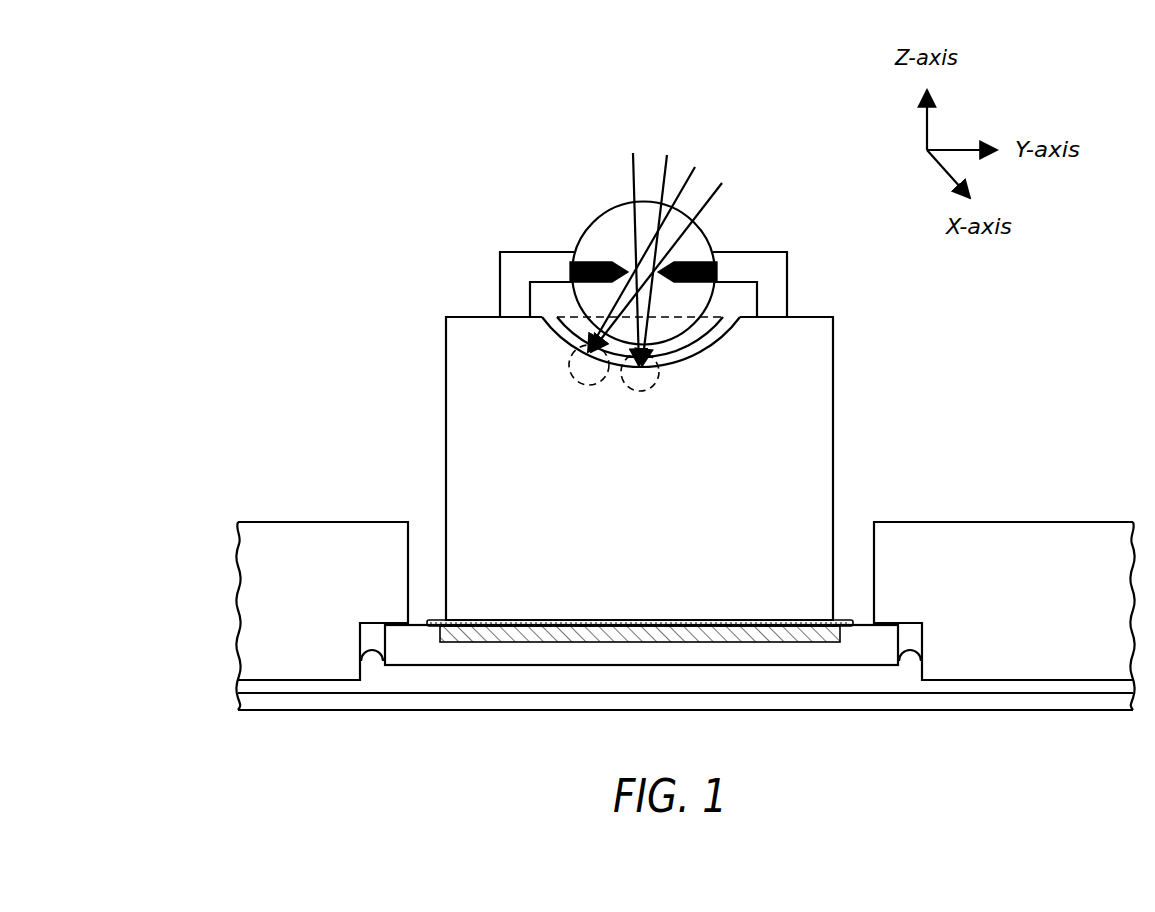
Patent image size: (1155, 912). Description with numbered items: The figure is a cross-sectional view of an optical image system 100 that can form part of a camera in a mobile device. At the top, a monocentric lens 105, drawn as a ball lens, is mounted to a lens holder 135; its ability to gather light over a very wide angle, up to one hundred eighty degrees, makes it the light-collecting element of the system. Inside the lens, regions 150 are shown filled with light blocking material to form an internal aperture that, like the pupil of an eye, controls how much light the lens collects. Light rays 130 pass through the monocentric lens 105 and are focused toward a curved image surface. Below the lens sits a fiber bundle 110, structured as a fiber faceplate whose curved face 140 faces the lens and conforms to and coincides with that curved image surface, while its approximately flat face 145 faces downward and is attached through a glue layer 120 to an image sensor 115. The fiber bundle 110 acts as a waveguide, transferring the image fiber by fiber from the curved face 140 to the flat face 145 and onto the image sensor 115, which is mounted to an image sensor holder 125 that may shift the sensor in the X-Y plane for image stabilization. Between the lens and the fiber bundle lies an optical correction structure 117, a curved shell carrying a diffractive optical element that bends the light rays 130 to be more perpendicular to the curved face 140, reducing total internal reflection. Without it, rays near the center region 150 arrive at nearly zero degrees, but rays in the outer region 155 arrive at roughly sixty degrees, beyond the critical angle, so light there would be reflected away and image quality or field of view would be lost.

The optical image system 100 is at (380, 169).
The monocentric lens 105 is at (585, 233).
The fiber bundle 110 is at (445, 350).
The image sensor 115 is at (538, 620).
The optical correction structure 117 is at (560, 332).
The glue layer 120 is at (699, 625).
The image sensor holder 125 is at (835, 652).
The light rays 130 is at (631, 163).
The lens holder 135 is at (758, 252).
The curved face 140 is at (722, 338).
The flat face 145 is at (615, 620).
The region 150 is at (597, 262).
The region 155 is at (577, 367).